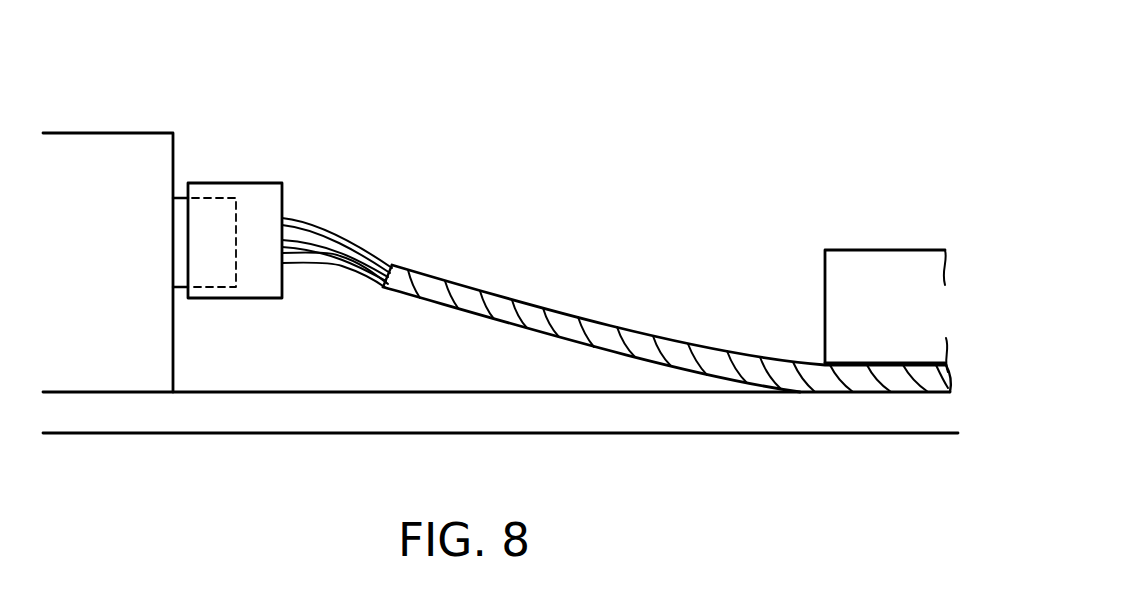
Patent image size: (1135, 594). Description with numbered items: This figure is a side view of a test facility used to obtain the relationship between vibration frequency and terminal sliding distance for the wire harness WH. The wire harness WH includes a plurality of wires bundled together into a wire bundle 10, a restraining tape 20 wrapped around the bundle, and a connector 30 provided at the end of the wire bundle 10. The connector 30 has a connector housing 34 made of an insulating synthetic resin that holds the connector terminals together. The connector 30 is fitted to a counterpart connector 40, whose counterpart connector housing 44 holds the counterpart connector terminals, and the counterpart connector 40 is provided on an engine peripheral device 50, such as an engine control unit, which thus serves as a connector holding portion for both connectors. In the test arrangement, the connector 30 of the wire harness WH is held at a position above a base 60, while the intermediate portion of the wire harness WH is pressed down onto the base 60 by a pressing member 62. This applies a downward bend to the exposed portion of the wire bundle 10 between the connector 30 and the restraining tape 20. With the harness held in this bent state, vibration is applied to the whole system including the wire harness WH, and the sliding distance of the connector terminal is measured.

The wire bundle 10 is at (345, 224).
The restraining tape 20 is at (465, 303).
The connector 30 is at (260, 174).
The connector housing 34 is at (267, 281).
The counterpart connector 40 is at (180, 178).
The counterpart connector housing 44 is at (180, 289).
The engine peripheral device 50 is at (102, 127).
The base 60 is at (333, 418).
The pressing member 62 is at (880, 262).
The wire harness WH is at (628, 320).